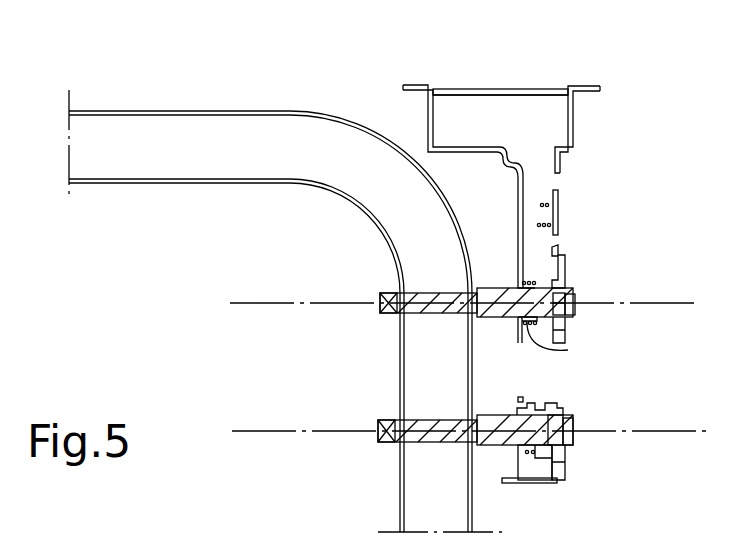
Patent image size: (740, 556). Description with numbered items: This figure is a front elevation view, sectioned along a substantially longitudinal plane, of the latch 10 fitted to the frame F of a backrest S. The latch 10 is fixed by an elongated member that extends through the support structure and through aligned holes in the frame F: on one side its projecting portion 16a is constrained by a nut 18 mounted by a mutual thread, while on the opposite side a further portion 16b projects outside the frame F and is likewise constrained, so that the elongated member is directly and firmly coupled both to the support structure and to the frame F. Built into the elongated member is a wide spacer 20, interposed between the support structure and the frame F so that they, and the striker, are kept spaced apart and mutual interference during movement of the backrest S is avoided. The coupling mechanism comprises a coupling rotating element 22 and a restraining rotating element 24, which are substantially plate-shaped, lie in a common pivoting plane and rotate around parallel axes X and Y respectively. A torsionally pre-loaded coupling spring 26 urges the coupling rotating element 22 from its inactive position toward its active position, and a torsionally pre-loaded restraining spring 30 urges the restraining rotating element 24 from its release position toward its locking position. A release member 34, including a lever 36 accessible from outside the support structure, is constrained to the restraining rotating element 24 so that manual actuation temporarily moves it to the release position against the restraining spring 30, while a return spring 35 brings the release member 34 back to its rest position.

The backrest S is at (204, 104).
The frame F is at (246, 137).
The pivoting axis X- X is at (258, 430).
The pivoting axis Y- Y is at (253, 302).
The latch 10 is at (585, 124).
The portion of the elongated member 16a is at (573, 298).
The further portion of the elongated member 16b is at (383, 293).
The nut 18 is at (565, 292).
The spacer 20 is at (503, 298).
The coupling rotating element 22 is at (560, 457).
The restraining rotating element 24 is at (558, 248).
The coupling spring 26 is at (530, 413).
The restraining spring 30 is at (568, 350).
The release member 34 is at (530, 76).
The return spring 35 is at (560, 190).
The lever 36 is at (550, 92).